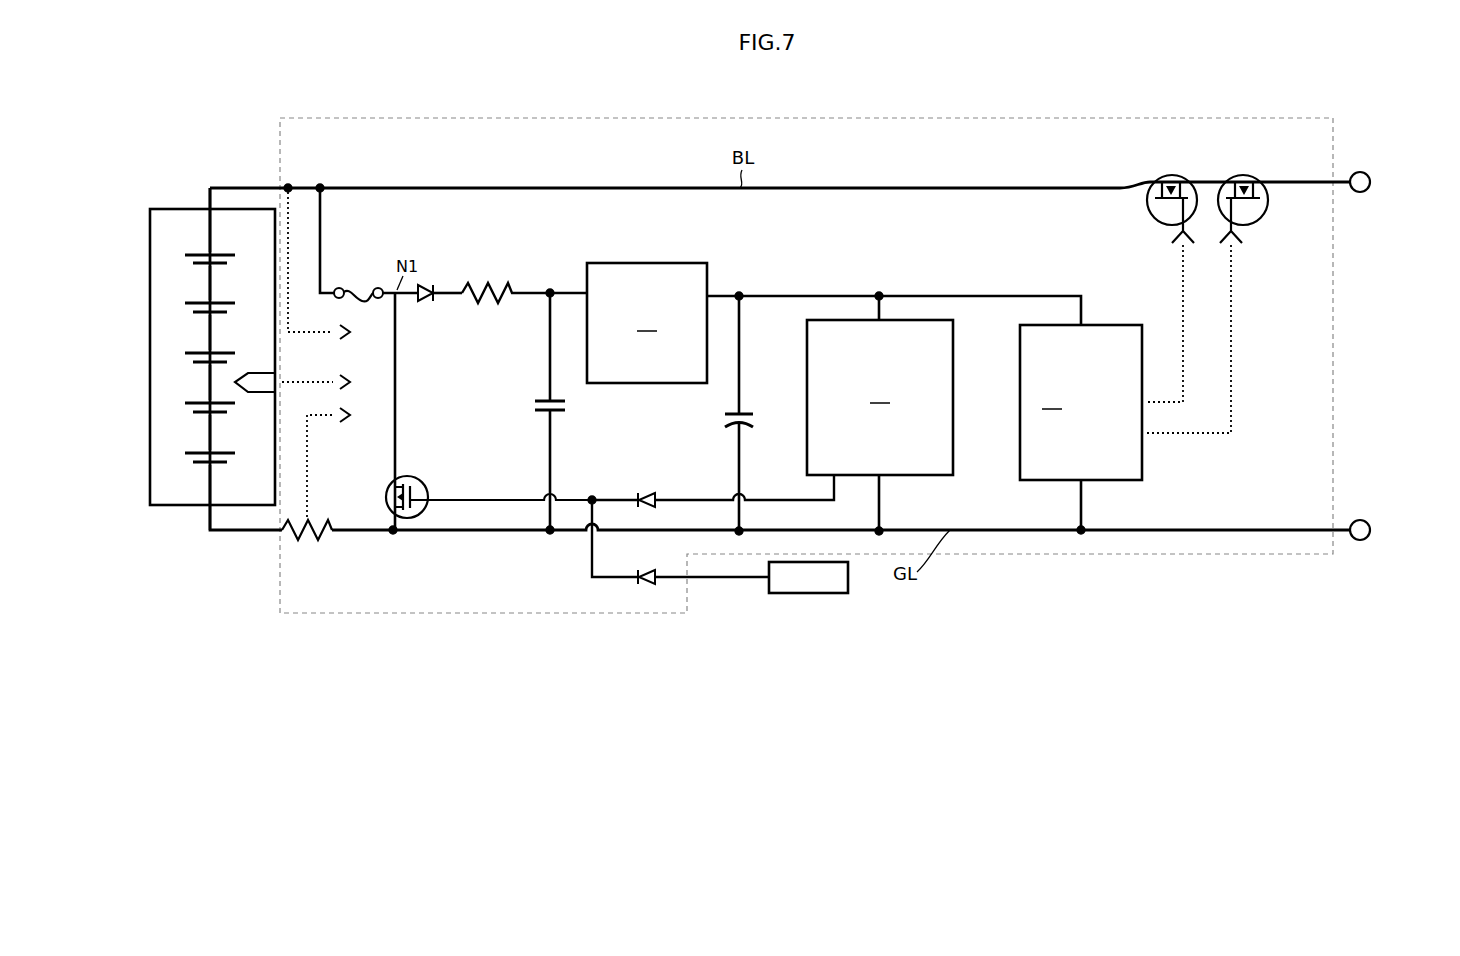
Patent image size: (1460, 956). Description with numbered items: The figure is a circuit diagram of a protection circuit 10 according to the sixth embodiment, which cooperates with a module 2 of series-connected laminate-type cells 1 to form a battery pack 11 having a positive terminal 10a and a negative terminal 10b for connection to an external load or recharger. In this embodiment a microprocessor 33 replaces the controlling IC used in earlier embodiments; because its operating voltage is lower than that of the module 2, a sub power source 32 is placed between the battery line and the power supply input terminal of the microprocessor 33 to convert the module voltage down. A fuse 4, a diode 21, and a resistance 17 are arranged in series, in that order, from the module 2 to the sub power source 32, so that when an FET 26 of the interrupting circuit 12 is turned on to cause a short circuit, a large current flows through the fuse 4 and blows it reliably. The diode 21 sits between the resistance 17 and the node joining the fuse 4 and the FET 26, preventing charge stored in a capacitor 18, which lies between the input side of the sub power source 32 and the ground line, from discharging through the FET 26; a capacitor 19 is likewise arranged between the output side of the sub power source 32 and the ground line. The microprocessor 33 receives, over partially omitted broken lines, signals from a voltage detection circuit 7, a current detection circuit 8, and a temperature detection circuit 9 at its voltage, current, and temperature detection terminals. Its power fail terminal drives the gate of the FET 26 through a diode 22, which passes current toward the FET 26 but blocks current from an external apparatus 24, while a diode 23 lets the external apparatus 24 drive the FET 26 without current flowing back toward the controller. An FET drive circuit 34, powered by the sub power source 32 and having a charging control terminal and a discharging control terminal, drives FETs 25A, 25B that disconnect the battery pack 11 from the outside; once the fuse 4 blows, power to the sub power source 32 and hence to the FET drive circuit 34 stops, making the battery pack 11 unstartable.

The cell 1 is at (205, 253).
The module 2 is at (176, 319).
The fuse 4 is at (352, 289).
The voltage detection circuit 7 is at (310, 328).
The current detection circuit 8 is at (312, 475).
The temperature detection circuit 9 is at (291, 367).
The protection circuit 10 is at (280, 128).
The positive terminal 10a is at (1370, 181).
The negative terminal 10b is at (1370, 530).
The battery pack 11 is at (185, 104).
The interrupting circuit 12 is at (619, 302).
The resistance 17 is at (488, 283).
The capacitor 18 is at (548, 400).
The capacitor 19 is at (750, 412).
The diode 21 is at (428, 288).
The diode 22 is at (640, 495).
The diode 23 is at (638, 582).
The external apparatus 24 is at (769, 588).
The FET 25A is at (1166, 176).
The FET 25B is at (1258, 177).
The FET 26 is at (422, 480).
The sub power source 32 is at (647, 323).
The microprocessor 33 is at (880, 413).
The FET drive circuit 34 is at (1081, 427).